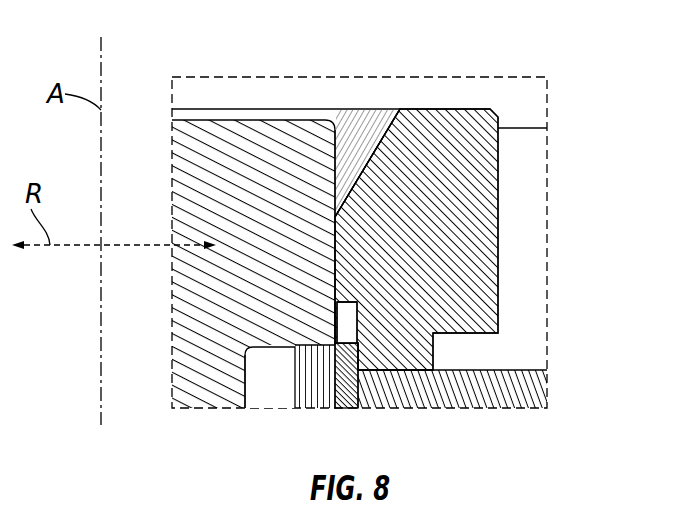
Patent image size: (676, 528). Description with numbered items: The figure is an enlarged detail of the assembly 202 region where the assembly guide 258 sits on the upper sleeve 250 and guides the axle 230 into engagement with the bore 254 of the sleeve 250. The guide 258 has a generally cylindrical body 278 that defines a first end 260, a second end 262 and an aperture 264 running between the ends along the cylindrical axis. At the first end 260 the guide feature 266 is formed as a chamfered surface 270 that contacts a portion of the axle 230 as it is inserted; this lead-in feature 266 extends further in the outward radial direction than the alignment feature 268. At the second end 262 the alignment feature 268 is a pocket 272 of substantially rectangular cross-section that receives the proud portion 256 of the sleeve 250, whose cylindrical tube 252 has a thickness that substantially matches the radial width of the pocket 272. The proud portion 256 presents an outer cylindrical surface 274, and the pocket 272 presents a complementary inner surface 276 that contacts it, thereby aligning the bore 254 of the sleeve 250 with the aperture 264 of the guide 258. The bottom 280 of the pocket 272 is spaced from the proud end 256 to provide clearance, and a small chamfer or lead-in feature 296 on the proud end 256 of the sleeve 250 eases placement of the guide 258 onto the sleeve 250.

The seal assembly 202 is at (523, 257).
The axle 230 is at (199, 107).
The sleeve 250 is at (357, 417).
The cylindrical tube 252 is at (272, 384).
The bore 254 is at (276, 360).
The proud portion 256 is at (345, 362).
The assembly guide 258 is at (470, 108).
The first end 260 is at (363, 108).
The second end 262 is at (412, 372).
The aperture 264 is at (335, 142).
The guide feature 266 is at (369, 172).
The alignment feature 268 is at (348, 318).
The chamfered surface 270 is at (369, 172).
The pocket 272 is at (348, 318).
The outer cylindrical surface 274 is at (358, 390).
The inner surface 276 is at (358, 330).
The cylindrical body 278 is at (470, 108).
The bottom 280 is at (348, 302).
The lead-in feature 296 is at (335, 330).